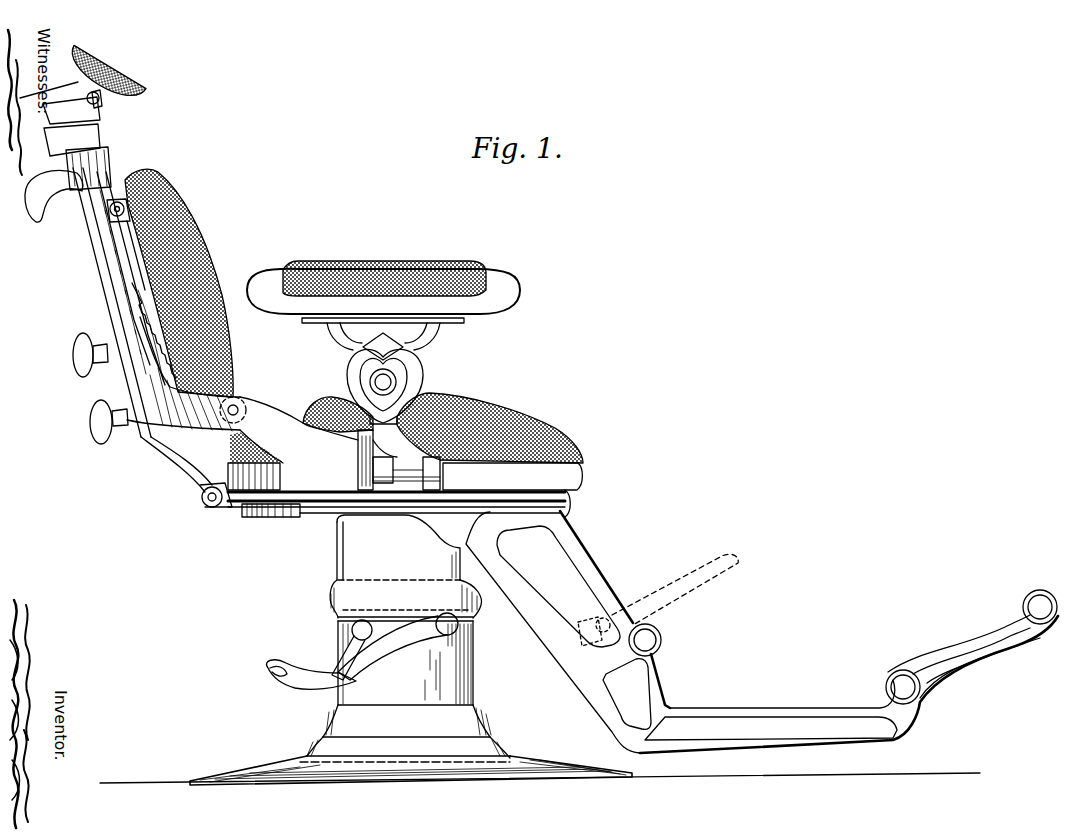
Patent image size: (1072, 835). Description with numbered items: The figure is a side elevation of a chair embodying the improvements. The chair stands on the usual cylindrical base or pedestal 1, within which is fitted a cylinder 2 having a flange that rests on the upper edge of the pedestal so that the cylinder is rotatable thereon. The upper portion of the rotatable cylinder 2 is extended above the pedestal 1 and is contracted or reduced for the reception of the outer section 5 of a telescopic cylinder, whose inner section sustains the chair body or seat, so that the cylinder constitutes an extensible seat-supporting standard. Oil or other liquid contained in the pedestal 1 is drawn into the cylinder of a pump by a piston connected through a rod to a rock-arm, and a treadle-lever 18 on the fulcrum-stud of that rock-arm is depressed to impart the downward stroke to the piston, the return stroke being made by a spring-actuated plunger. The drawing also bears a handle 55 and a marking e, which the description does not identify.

The base or pedestal 1 is at (477, 683).
The cylinder 2 is at (478, 622).
The outer section of telescopic cylinder 5 is at (332, 637).
The treadle-lever 18 is at (400, 640).
The handle 55 is at (345, 654).
The headrest rod e is at (383, 340).